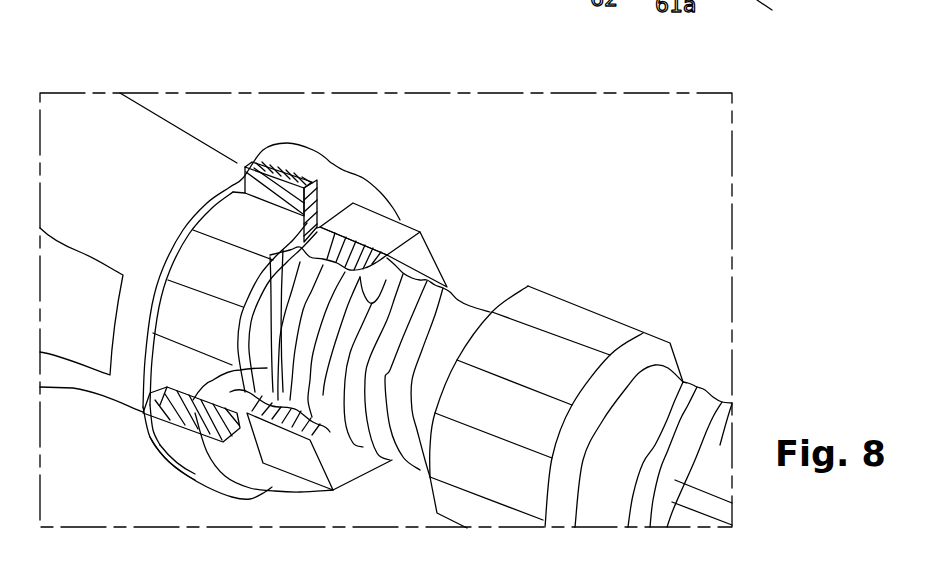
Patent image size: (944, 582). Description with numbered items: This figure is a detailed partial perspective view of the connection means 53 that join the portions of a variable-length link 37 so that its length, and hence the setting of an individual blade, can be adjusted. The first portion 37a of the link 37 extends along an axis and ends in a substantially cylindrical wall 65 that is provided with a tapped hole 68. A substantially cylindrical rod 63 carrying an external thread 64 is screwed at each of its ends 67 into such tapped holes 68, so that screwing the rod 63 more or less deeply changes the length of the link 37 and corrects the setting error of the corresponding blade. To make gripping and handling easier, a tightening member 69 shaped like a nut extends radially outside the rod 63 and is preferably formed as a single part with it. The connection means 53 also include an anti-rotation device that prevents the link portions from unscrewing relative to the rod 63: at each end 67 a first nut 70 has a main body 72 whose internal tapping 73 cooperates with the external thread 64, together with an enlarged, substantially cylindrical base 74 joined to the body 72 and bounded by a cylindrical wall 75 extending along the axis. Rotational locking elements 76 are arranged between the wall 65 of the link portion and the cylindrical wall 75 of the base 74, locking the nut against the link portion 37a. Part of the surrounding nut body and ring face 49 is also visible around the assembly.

The link 37 is at (90, 75).
The first portion 37a is at (130, 130).
The nut body 49 is at (155, 163).
The wall 65 is at (213, 220).
The rotational locking elements 76 is at (270, 200).
The tapped hole 68 is at (338, 267).
The first nut 70 is at (418, 250).
The internal tapping 73 is at (362, 302).
The external thread 64 is at (368, 437).
The rod 63 is at (415, 450).
The tightening member 69 is at (498, 470).
The connection means 53 is at (653, 304).
The main body 72 is at (293, 457).
The end 67 is at (187, 393).
The cylindrical wall 75 is at (168, 448).
The enlarged base 74 is at (182, 465).